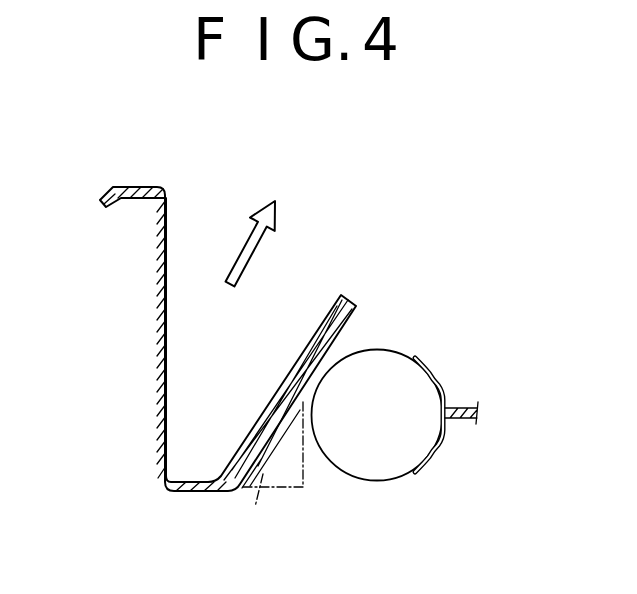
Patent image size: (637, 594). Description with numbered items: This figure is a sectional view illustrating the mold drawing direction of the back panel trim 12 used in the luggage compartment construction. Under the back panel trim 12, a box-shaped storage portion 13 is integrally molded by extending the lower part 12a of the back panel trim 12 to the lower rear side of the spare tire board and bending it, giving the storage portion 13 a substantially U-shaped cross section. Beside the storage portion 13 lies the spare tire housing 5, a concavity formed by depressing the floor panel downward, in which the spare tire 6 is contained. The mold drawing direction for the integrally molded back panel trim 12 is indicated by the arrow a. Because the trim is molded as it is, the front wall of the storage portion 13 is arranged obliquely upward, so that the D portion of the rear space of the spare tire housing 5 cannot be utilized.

The back panel trim 12 is at (138, 186).
The lower part of the back panel trim 12a is at (157, 347).
The storage portion 13 is at (185, 442).
The spare tire 6 is at (393, 481).
The spare tire housing 5 is at (518, 362).
The D portion D is at (273, 473).
The arrow a is at (251, 255).